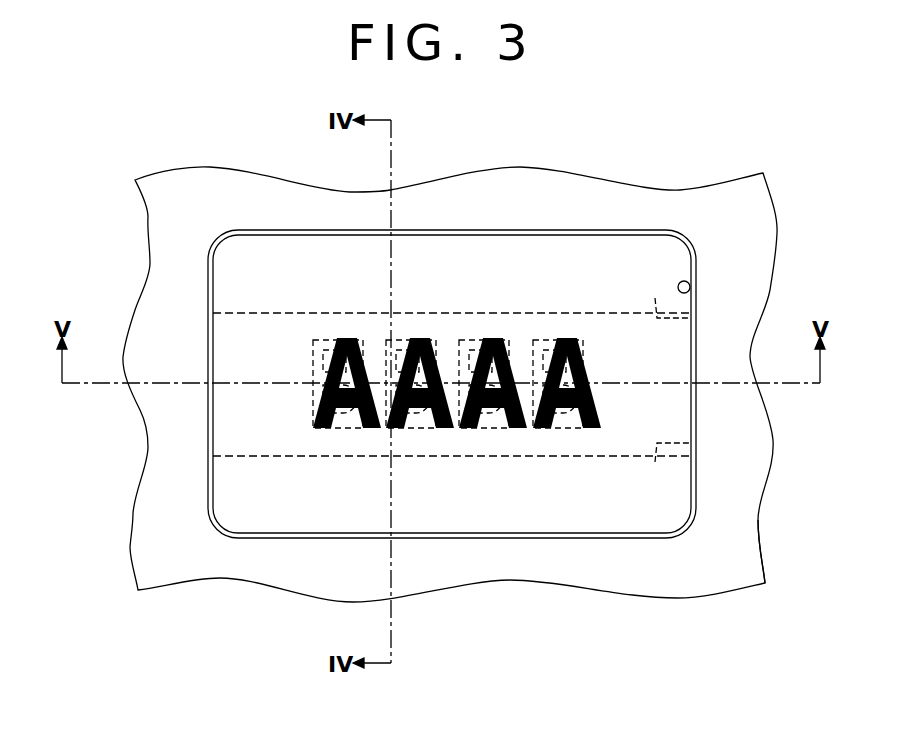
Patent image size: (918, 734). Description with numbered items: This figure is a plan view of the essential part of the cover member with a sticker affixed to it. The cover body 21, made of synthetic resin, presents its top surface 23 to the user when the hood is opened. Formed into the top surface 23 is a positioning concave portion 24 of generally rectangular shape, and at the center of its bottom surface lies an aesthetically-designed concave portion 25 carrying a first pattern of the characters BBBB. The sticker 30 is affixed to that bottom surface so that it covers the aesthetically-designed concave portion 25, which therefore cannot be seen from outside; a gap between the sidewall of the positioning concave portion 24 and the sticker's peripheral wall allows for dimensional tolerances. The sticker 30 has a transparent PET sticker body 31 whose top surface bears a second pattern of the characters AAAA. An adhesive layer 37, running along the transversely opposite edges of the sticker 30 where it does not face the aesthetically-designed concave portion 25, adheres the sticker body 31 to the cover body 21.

The cover body 21 is at (746, 556).
The top surface 23 is at (745, 512).
The positioning concave portion 24 is at (696, 290).
The aesthetically-designed concave portion 25 is at (583, 356).
The sticker 30 is at (636, 255).
The sticker body 31 is at (575, 255).
The adhesive layer 37 is at (690, 318).